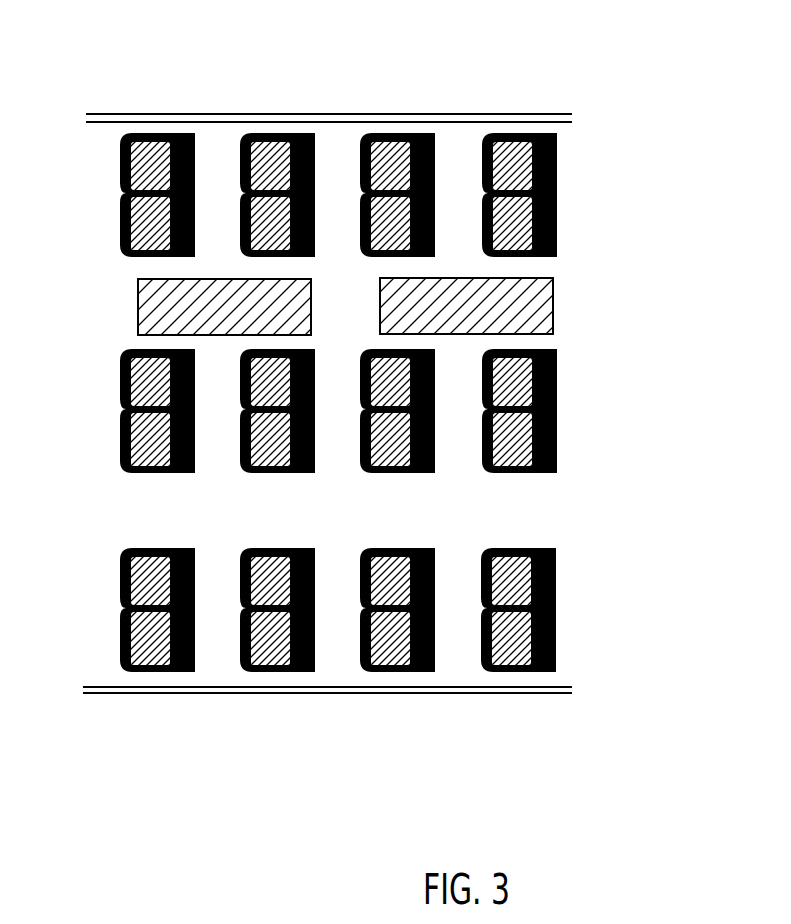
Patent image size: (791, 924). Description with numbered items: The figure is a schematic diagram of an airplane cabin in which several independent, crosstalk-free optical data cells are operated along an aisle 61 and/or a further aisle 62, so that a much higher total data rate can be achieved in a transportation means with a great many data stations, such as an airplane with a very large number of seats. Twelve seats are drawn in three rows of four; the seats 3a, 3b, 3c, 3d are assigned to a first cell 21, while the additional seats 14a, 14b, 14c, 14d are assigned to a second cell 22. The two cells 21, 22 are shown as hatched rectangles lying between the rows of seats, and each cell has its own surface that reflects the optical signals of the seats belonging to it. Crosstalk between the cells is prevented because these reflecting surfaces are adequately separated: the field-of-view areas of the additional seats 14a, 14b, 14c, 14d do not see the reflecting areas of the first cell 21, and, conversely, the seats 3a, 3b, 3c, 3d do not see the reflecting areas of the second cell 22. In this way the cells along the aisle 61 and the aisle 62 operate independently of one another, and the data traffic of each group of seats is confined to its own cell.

The seat 3a is at (148, 152).
The seat 3b is at (273, 155).
The seat 3c is at (143, 445).
The seat 3d is at (278, 448).
The additional seat 14a is at (390, 150).
The additional seat 14b is at (500, 150).
The additional seat 14c is at (390, 442).
The additional seat 14d is at (513, 442).
The first cell 21 is at (153, 303).
The second cell 22 is at (533, 310).
The aisle 61 is at (355, 320).
The aisle 62 is at (168, 532).